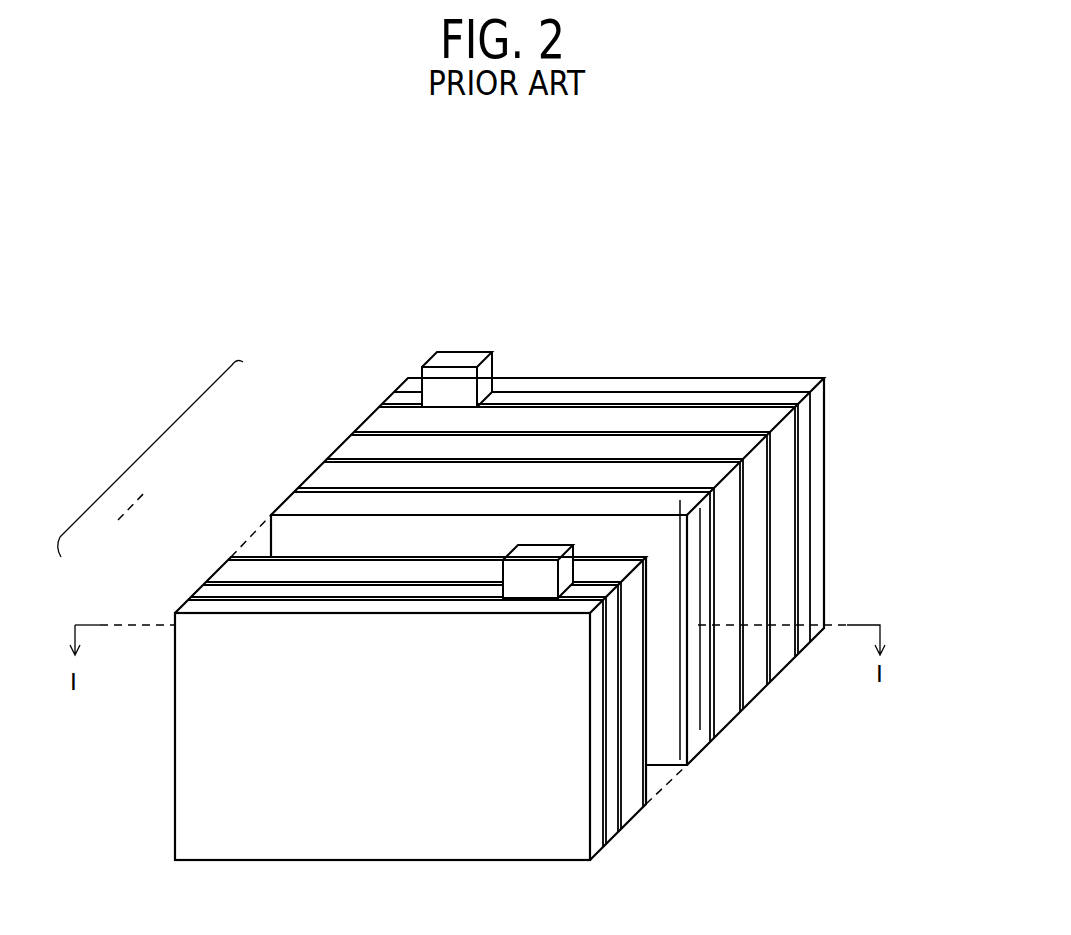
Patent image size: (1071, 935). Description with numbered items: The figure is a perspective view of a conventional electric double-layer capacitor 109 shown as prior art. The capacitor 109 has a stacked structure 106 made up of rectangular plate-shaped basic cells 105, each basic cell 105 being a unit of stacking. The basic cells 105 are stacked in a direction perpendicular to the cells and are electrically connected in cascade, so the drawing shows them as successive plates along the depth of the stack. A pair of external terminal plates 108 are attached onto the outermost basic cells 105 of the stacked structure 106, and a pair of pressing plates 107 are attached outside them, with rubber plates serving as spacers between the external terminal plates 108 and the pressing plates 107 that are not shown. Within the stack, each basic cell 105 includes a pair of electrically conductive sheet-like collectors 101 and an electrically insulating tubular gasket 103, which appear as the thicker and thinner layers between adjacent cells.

The collector 101 is at (795, 553).
The gasket 103 is at (783, 567).
The basic cell 105 is at (363, 420).
The stacked structure 106 is at (150, 447).
The pressing plate 107 is at (817, 418).
The external terminal plate 108 is at (803, 446).
The electric double-layer capacitor 109 is at (653, 337).